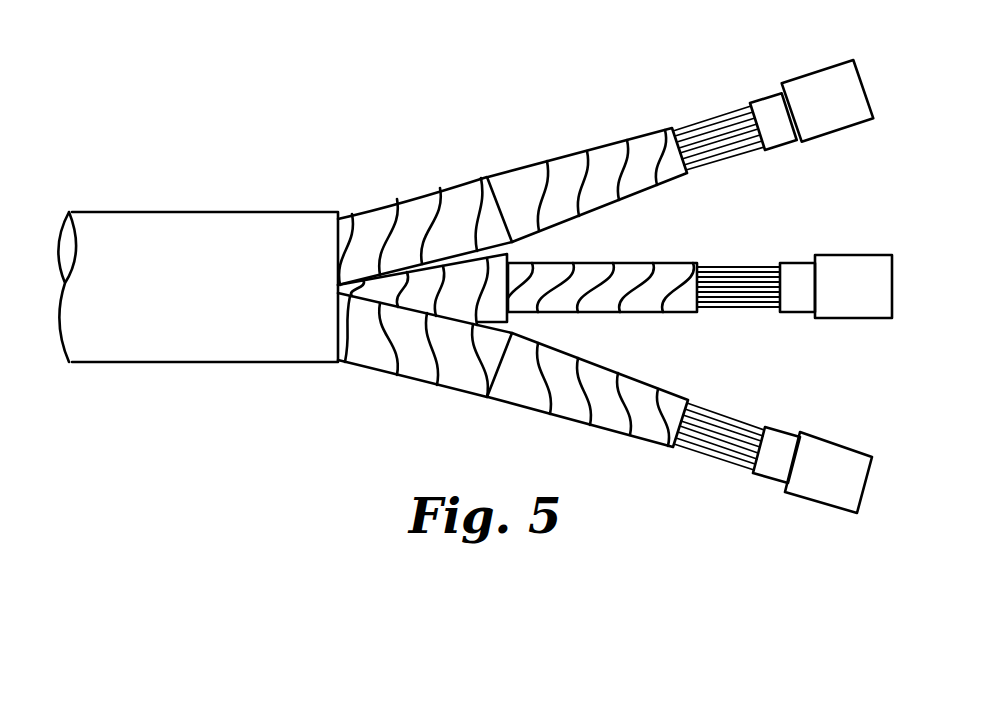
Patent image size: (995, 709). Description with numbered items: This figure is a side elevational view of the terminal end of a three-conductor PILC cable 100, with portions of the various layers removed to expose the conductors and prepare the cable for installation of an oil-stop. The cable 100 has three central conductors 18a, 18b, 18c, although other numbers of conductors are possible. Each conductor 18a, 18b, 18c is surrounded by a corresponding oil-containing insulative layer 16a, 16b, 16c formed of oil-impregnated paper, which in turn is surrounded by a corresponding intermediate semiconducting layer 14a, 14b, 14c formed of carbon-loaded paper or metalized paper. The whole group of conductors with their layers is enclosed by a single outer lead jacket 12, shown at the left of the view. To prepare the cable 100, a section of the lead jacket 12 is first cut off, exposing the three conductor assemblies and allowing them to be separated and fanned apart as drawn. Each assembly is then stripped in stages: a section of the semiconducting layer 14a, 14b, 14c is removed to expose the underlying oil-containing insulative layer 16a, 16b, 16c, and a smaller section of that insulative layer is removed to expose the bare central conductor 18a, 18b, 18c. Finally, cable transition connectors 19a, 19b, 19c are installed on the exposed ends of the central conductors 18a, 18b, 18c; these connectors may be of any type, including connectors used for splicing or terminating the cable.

The cable 100 is at (190, 87).
The outer lead jacket 12 is at (208, 230).
The intermediate semiconducting layer 14a is at (418, 218).
The intermediate semiconducting layer 14b is at (480, 277).
The intermediate semiconducting layer 14c is at (417, 352).
The oil-containing insulative layer 16a is at (577, 172).
The oil-containing insulative layer 16b is at (625, 278).
The oil-containing insulative layer 16c is at (575, 398).
The conductor 18a is at (713, 128).
The conductor 18b is at (730, 272).
The conductor 18c is at (713, 445).
The cable transition connector 19a is at (825, 87).
The cable transition connector 19b is at (850, 270).
The cable transition connector 19c is at (825, 483).